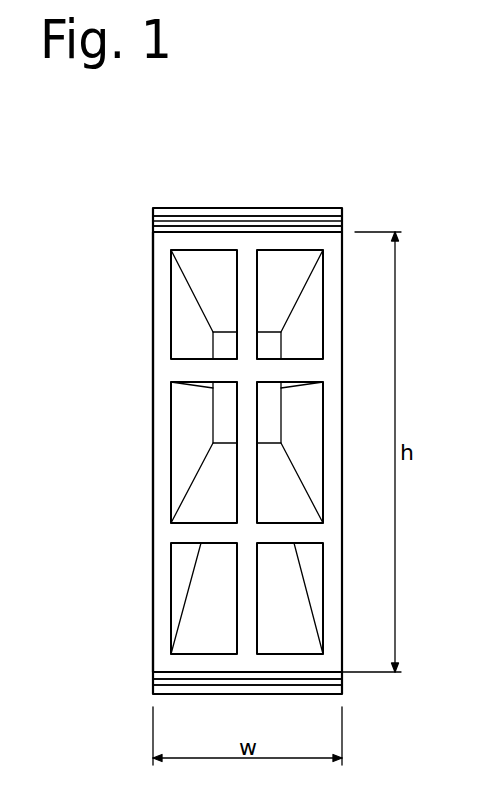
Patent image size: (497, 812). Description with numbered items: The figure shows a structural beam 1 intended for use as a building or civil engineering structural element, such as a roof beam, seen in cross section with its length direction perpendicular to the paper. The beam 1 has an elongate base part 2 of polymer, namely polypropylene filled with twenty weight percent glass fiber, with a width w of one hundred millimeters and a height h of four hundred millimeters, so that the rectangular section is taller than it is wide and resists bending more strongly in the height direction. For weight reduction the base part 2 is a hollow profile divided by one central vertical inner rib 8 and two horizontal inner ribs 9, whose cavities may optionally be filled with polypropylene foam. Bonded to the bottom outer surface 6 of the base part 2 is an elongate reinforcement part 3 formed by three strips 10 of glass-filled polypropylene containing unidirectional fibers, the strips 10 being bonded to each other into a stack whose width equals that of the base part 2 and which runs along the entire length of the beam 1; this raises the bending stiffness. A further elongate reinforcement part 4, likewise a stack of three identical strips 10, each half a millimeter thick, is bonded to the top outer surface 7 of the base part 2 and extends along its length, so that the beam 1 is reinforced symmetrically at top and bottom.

The structural beam 1 is at (133, 194).
The elongate base part 2 is at (147, 435).
The elongate reinforcement part 3 is at (329, 700).
The further elongate reinforcement part 4 is at (275, 199).
The bottom outer surface 6 is at (225, 667).
The top outer surface 7 is at (296, 238).
The central vertical inner rib 8 is at (247, 307).
The horizontal inner ribs 9 is at (210, 370).
The strips 10 is at (313, 213).